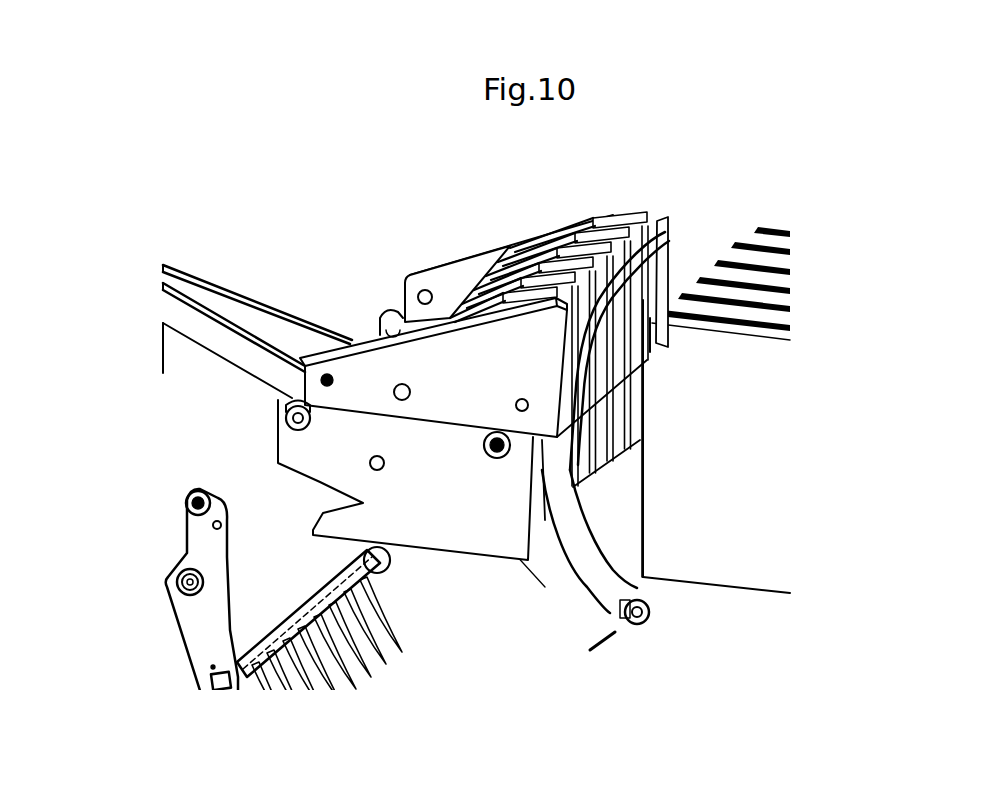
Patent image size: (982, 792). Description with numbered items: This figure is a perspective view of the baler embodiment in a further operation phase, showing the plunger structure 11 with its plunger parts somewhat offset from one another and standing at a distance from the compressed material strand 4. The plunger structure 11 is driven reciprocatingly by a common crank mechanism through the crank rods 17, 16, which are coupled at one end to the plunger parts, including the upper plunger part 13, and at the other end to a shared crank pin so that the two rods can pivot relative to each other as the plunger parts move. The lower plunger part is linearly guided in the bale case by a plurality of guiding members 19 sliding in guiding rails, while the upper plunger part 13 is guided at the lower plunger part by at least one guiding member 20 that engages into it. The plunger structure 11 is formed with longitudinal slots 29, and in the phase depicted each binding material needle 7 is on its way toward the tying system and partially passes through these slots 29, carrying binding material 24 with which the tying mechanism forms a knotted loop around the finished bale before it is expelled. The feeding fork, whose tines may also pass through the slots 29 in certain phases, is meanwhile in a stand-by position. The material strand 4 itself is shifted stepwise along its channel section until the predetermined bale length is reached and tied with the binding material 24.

The material strand 4 is at (727, 387).
The binding material needle 7 is at (593, 575).
The plunger structure 11 is at (370, 263).
The upper plunger part 13 is at (583, 224).
The crank rod 16 is at (280, 325).
The crank rod 17 is at (252, 358).
The guiding member 19 is at (487, 462).
The guiding member 20 is at (327, 374).
The binding material 24 is at (668, 300).
The longitudinal slot 29 is at (643, 214).